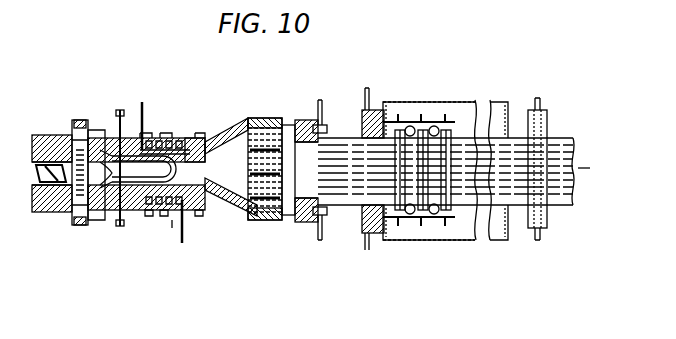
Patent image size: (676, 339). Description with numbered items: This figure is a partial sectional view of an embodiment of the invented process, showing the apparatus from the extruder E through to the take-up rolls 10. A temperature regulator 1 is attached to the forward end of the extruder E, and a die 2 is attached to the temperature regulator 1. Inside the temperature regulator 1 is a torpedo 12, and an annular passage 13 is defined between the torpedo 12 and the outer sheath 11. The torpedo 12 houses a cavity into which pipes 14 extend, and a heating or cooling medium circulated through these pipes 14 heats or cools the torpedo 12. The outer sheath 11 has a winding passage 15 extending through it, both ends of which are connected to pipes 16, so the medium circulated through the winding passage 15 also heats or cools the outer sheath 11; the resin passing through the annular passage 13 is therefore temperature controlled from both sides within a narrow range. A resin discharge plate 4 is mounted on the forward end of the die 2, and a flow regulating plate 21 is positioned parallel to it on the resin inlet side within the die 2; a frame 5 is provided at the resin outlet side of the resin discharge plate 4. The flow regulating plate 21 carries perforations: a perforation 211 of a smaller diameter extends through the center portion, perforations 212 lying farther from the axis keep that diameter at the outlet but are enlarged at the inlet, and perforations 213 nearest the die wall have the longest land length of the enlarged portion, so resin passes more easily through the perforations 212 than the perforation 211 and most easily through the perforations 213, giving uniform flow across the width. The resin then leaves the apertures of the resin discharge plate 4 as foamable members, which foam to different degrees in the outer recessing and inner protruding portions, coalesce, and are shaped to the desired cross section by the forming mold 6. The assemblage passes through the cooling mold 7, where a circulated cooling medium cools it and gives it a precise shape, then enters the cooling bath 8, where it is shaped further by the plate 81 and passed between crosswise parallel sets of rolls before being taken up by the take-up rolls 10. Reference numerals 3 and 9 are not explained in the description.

The extruder E is at (52, 222).
The temperature regulator 1 is at (100, 222).
The die 2 is at (240, 128).
The flange 3 is at (173, 222).
The resin discharge plate 4 is at (300, 216).
The frame 5 is at (319, 124).
The forming mold 6 is at (335, 128).
The cooling mold 7 is at (377, 124).
The cooling bath 8 is at (427, 238).
The plate 81 is at (380, 230).
The roller 9 is at (434, 126).
The take-up rolls 10 is at (534, 232).
The outer sheath 11 is at (160, 133).
The torpedo 12 is at (166, 210).
The annular passage 13 is at (176, 134).
The pipes 14 is at (118, 122).
The winding passage 15 is at (156, 132).
The pipes 16 is at (141, 110).
The flow regulating plate 21 is at (270, 120).
The perforation 211 is at (258, 215).
The perforations 212 is at (263, 220).
The perforations 213 is at (268, 218).